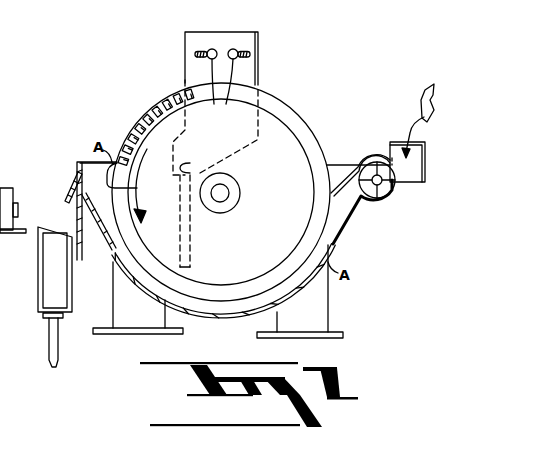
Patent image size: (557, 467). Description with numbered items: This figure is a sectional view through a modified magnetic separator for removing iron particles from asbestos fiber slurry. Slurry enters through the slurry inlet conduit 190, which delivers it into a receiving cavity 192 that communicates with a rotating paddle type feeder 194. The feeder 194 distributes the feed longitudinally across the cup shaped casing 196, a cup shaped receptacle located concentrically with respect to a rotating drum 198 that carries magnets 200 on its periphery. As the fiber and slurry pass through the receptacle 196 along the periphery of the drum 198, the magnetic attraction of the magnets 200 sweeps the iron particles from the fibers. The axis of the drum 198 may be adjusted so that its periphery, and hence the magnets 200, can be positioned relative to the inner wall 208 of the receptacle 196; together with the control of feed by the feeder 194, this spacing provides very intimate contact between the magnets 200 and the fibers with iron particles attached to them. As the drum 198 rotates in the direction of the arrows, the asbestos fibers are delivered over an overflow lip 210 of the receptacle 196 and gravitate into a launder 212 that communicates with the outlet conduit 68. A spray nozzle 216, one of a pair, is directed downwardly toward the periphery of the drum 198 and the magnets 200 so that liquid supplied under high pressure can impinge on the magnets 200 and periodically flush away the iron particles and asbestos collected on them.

The outlet conduit 68 is at (56, 357).
The slurry inlet conduit 190 is at (426, 90).
The receiving cavity 192 is at (407, 183).
The paddle type feeder 194 is at (373, 199).
The cup shaped casing 196 is at (250, 303).
The rotating drum 198 is at (278, 143).
The magnets 200 is at (150, 106).
The inner wall 208 is at (200, 316).
The overflow lip 210 is at (72, 178).
The launder 212 is at (50, 258).
The spray nozzle 216 is at (221, 76).